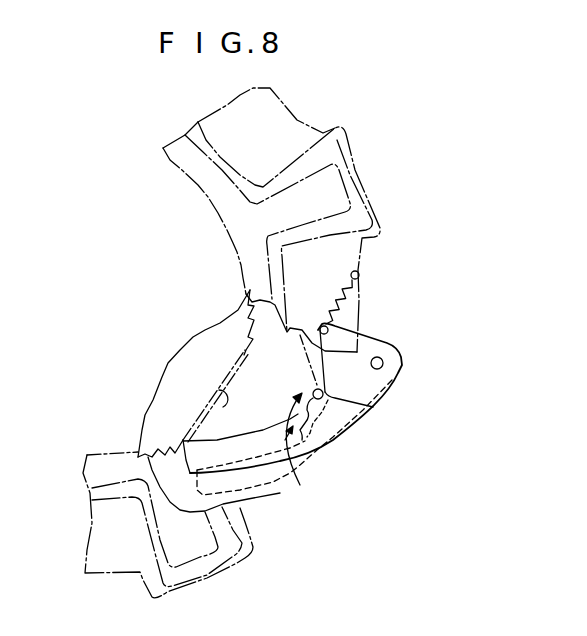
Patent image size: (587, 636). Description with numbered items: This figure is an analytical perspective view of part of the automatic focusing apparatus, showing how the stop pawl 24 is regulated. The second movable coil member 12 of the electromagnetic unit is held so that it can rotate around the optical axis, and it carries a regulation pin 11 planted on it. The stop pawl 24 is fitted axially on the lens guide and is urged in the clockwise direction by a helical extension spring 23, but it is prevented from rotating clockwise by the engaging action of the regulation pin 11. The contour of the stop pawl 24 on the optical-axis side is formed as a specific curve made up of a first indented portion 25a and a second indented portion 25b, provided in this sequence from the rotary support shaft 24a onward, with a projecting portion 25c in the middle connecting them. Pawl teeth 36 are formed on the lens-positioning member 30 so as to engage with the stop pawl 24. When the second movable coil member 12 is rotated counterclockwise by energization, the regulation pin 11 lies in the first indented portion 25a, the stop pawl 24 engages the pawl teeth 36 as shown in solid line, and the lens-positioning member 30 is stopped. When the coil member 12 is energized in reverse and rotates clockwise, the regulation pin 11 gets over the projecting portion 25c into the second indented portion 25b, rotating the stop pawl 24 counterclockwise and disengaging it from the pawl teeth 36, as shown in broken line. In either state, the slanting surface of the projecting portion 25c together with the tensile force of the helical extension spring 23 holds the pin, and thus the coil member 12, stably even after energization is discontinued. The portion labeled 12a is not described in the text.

The regulation pin 11 is at (374, 408).
The second movable coil member 12 is at (363, 178).
The cam projection 12a is at (300, 160).
The helical extension spring 23 is at (348, 300).
The stop pawl 24 is at (345, 417).
The rotary support shaft 24a is at (384, 363).
The first indented portion 25a is at (310, 384).
The second indented portion 25b is at (296, 430).
The projecting portion 25c is at (245, 525).
The lens-positioning member 30 is at (153, 400).
The pawl teeth 36 is at (222, 392).